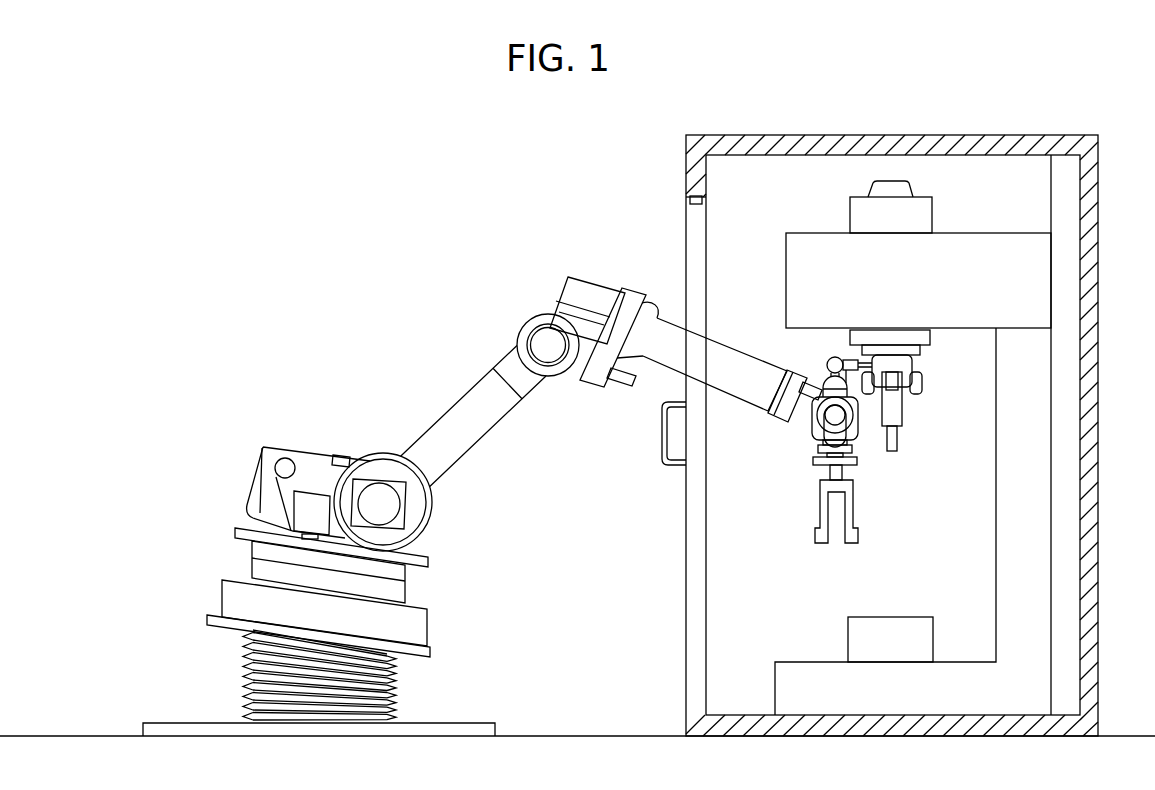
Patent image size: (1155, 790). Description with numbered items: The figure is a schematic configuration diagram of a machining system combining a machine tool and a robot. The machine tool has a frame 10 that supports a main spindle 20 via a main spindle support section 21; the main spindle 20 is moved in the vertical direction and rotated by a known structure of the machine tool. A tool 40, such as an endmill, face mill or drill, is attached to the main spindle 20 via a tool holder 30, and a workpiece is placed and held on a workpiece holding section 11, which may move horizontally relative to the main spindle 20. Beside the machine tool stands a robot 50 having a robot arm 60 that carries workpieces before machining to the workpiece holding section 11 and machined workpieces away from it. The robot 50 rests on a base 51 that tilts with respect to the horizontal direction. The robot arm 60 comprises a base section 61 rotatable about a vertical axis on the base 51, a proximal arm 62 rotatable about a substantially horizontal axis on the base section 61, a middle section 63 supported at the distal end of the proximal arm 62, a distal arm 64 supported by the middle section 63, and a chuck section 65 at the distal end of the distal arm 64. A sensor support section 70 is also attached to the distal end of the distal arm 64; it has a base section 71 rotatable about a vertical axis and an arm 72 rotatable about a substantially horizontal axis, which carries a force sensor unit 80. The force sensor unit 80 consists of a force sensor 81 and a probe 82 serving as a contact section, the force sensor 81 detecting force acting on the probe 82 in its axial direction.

The frame 10 is at (990, 233).
The workpiece holding section 11 is at (847, 635).
The main spindle 20 is at (920, 350).
The main spindle support section 21 is at (930, 338).
The tool holder 30 is at (921, 382).
The tool 40 is at (902, 415).
The robot 50 is at (315, 558).
The base 51 is at (222, 594).
The robot arm 60 is at (583, 367).
The base section 61 is at (262, 527).
The proximal arm 62 is at (440, 416).
The middle section 63 is at (574, 386).
The distal arm 64 is at (664, 320).
The chuck section 65 is at (820, 508).
The sensor support section 70 is at (820, 382).
The base section 71 is at (810, 430).
The arm 72 is at (826, 375).
The force sensor unit 80 is at (840, 348).
The force sensor 81 is at (848, 372).
The probe 82 is at (865, 360).